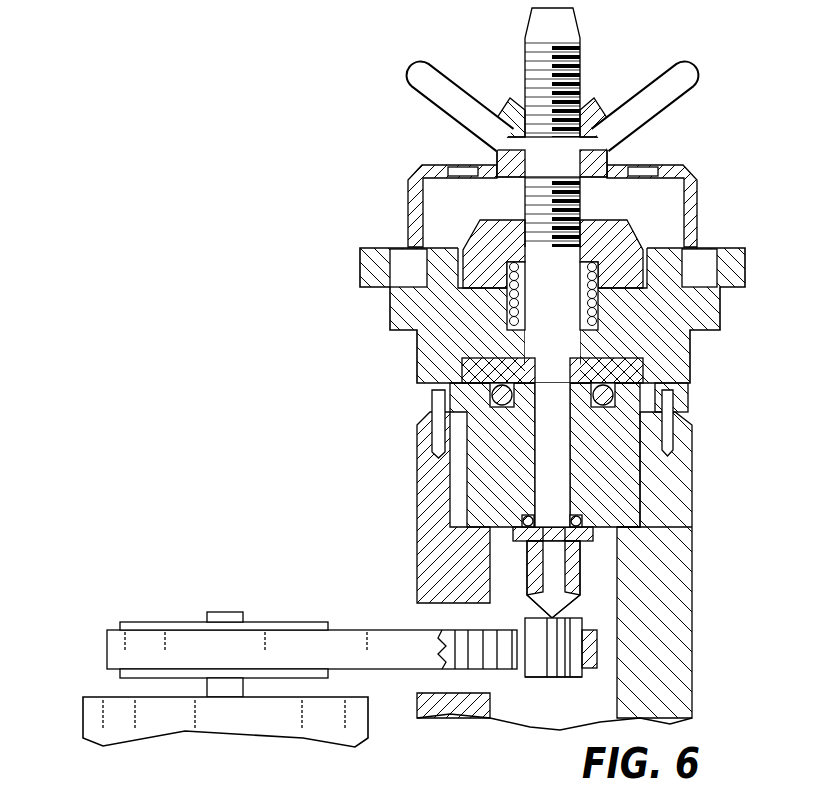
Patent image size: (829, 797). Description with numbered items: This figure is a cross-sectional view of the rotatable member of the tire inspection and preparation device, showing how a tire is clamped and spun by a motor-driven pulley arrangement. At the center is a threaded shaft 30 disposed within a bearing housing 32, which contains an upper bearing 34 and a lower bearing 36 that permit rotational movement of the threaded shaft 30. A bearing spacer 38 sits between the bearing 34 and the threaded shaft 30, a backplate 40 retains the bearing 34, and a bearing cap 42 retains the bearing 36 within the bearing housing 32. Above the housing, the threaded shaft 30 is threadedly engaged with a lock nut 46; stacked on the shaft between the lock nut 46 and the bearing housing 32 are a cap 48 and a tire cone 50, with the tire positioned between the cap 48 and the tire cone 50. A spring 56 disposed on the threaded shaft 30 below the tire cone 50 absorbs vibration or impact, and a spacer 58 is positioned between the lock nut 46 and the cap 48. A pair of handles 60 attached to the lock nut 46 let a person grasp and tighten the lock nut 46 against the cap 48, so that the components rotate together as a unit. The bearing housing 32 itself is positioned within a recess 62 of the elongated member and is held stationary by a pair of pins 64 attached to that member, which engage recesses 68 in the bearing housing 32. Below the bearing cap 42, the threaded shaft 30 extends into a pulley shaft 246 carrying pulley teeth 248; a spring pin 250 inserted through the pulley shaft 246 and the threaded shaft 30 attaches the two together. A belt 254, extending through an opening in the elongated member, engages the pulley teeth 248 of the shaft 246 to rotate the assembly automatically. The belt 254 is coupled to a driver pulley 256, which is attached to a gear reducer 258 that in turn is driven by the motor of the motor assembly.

The threaded shaft 30 is at (580, 62).
The bearing housing 32 is at (632, 488).
The bearing 34 is at (603, 360).
The bearing 36 is at (520, 520).
The bearing spacer 38 is at (612, 350).
The backplate 40 is at (645, 368).
The bearing cap 42 is at (595, 534).
The lock nut 46 is at (608, 142).
The cap 48 is at (698, 210).
The tire cone 50 is at (466, 240).
The spring 56 is at (508, 303).
The spacer 58 is at (497, 160).
The handles 60 is at (664, 98).
The recess 62 is at (458, 509).
The pins 64 is at (665, 423).
The recesses 68 is at (676, 397).
The pulley shaft 246 is at (570, 624).
The pulley teeth 248 is at (556, 678).
The spring pin 250 is at (527, 573).
The belt 254 is at (378, 634).
The driver pulley 256 is at (148, 621).
The gear reducer 258 is at (83, 714).